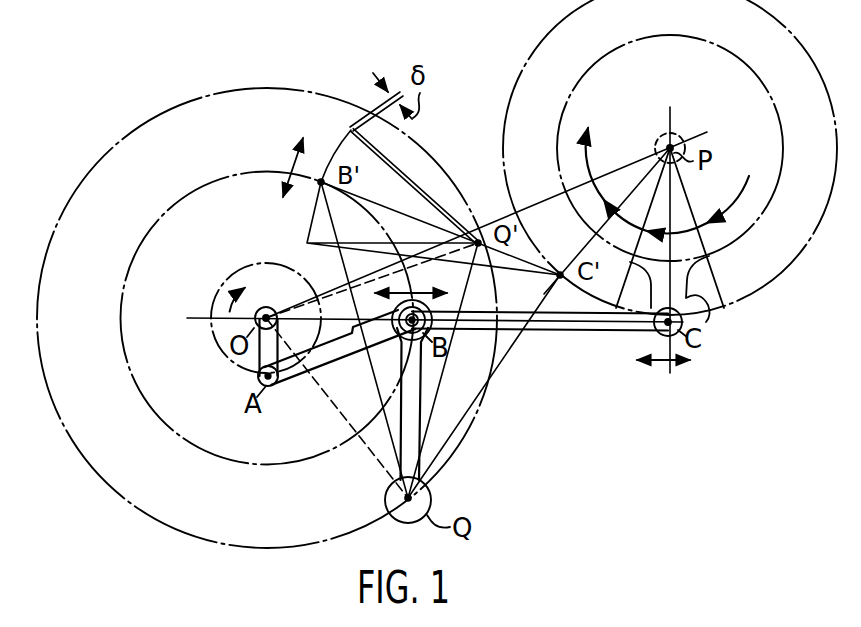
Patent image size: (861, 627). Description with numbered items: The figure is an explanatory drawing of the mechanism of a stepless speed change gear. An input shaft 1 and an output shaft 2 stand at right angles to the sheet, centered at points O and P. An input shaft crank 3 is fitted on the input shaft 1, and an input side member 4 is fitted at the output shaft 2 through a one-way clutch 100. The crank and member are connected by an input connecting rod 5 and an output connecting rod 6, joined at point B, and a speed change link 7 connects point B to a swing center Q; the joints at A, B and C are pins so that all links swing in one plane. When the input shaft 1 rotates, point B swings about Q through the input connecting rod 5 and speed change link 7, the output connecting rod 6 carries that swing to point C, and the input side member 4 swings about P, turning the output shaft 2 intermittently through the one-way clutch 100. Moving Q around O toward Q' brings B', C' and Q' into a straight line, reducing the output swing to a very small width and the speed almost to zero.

The input shaft 1 is at (258, 308).
The output shaft 2 is at (678, 131).
The input shaft crank 3 is at (251, 362).
The input side member 4 is at (707, 323).
The input connecting rod 5 is at (336, 358).
The output connecting rod 6 is at (557, 333).
The speed change link 7 is at (421, 387).
The one-way clutch 100 is at (605, 80).